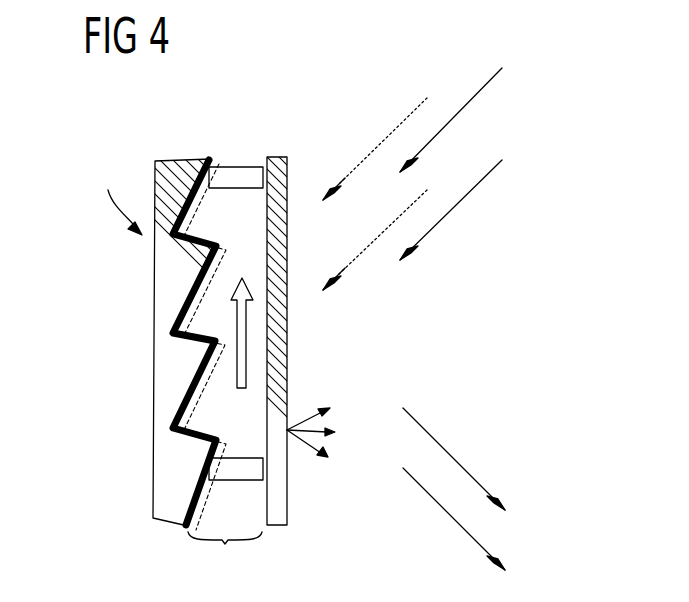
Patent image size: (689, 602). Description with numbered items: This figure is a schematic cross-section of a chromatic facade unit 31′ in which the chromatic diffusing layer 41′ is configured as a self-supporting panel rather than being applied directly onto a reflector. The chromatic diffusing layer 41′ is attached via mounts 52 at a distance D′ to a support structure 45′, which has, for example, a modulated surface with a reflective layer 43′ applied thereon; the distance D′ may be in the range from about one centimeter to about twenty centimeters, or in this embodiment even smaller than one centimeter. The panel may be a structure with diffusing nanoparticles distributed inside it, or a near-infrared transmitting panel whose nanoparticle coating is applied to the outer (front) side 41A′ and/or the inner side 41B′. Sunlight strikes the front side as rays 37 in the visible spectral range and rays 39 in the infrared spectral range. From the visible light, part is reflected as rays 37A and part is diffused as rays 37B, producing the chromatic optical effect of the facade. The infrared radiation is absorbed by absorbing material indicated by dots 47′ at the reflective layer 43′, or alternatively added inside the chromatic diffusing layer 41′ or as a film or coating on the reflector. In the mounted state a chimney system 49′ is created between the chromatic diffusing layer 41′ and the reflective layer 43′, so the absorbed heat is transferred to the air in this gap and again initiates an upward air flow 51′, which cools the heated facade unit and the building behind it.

The chromatic facade unit 31′ is at (109, 202).
The rays in the visible spectral range 37 is at (457, 202).
The reflected rays 37A is at (457, 460).
The diffused rays 37B is at (325, 420).
The rays in the infrared spectral range 39 is at (395, 130).
The chromatic diffusing layer 41′ is at (292, 187).
The outer (front) side 41A′ is at (288, 493).
The inner side 41B′ is at (262, 497).
The reflective layer 43′ is at (210, 377).
The support structure 45′ is at (157, 448).
The dots 47′ is at (190, 222).
The chimney system 49′ is at (185, 197).
The upward air flow 51′ is at (287, 350).
The mounts 52 is at (233, 167).
The distance D′ is at (225, 557).